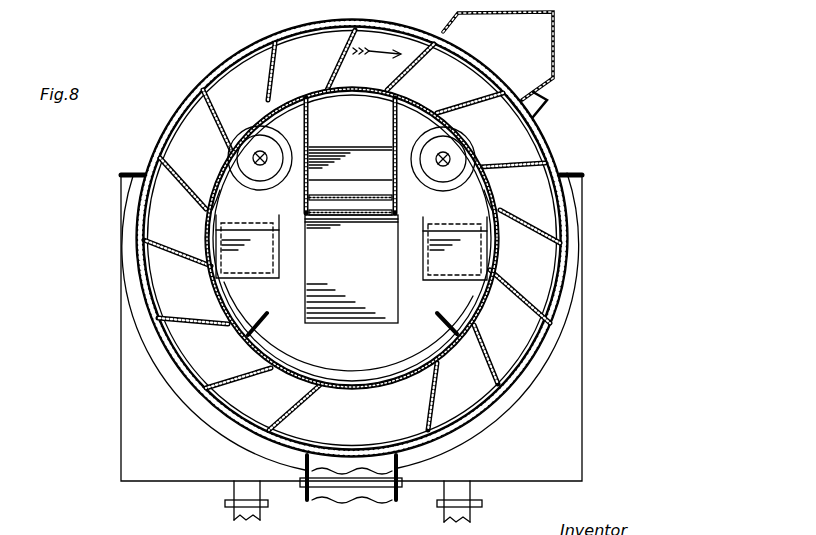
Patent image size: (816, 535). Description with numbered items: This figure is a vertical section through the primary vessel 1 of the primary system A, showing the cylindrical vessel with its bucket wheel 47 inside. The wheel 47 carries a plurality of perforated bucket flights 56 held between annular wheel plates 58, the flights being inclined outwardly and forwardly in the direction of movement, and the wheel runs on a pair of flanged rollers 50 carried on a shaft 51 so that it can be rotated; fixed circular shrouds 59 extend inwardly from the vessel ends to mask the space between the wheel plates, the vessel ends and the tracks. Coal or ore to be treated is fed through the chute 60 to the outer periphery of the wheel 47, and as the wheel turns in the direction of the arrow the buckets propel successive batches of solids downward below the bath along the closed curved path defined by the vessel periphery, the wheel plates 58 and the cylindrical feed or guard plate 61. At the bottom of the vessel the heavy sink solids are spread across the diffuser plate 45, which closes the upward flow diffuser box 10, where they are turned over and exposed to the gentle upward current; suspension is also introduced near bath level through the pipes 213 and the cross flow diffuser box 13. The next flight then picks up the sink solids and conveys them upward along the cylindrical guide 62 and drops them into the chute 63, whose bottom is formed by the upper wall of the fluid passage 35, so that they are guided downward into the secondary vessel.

The primary vessel 1 is at (166, 128).
The upward flow diffuser box 10 is at (310, 490).
The cross flow diffuser box 13 is at (253, 262).
The passage 35 is at (350, 207).
The diffuser plate 45 is at (366, 455).
The bucket wheel 47 is at (300, 50).
The flanged rollers 50 is at (291, 184).
The shaft 51 is at (257, 150).
The bucket flights 56 is at (274, 78).
The annular wheel plates 58 is at (397, 40).
The circular shrouds 59 is at (294, 369).
The chute 60 is at (548, 30).
The cylindrical feed or guard plate 61 is at (488, 195).
The cylindrical guide 62 is at (217, 190).
The chute 63 is at (330, 162).
The pipes 213 is at (236, 493).
The primary system A is at (232, 50).